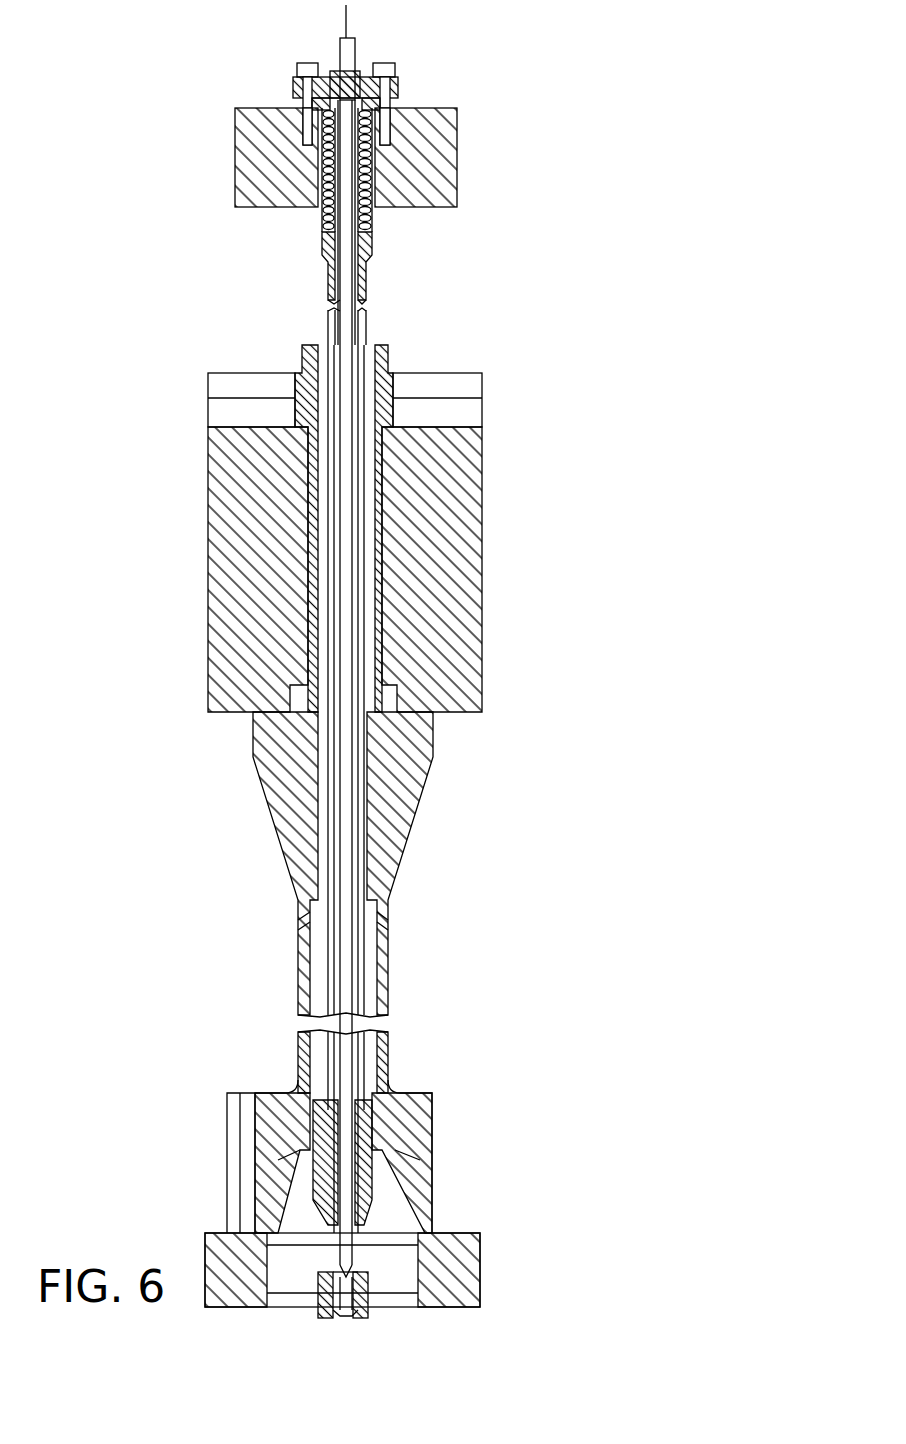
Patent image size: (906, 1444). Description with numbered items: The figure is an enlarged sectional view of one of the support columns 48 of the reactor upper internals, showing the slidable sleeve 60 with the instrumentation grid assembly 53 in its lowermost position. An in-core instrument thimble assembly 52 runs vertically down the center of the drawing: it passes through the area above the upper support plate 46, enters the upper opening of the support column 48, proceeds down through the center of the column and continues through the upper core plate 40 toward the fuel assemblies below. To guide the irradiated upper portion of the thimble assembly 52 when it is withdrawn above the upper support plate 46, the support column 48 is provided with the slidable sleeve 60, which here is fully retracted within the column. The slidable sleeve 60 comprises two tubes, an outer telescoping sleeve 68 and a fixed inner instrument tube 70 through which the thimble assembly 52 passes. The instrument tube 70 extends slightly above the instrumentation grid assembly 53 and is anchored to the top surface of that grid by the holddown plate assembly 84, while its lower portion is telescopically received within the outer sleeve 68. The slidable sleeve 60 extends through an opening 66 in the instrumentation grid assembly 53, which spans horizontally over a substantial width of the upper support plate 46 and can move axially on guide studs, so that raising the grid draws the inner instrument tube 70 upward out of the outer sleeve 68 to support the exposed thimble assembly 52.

The upper core plate 40 is at (482, 1262).
The upper support plate 46 is at (482, 565).
The support column 48 is at (430, 797).
The in-core instrument thimble assembly 52 is at (346, 18).
The instrumentation grid assembly 53 is at (457, 152).
The slidable sleeve 60 is at (410, 332).
The opening 66 is at (320, 190).
The outer telescoping sleeve 68 is at (364, 330).
The fixed inner instrument tube 70 is at (350, 995).
The holddown plate assembly 84 is at (363, 78).